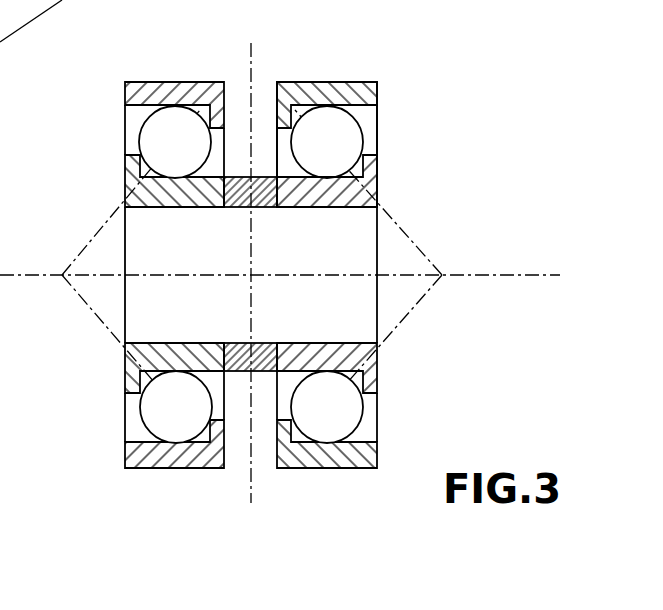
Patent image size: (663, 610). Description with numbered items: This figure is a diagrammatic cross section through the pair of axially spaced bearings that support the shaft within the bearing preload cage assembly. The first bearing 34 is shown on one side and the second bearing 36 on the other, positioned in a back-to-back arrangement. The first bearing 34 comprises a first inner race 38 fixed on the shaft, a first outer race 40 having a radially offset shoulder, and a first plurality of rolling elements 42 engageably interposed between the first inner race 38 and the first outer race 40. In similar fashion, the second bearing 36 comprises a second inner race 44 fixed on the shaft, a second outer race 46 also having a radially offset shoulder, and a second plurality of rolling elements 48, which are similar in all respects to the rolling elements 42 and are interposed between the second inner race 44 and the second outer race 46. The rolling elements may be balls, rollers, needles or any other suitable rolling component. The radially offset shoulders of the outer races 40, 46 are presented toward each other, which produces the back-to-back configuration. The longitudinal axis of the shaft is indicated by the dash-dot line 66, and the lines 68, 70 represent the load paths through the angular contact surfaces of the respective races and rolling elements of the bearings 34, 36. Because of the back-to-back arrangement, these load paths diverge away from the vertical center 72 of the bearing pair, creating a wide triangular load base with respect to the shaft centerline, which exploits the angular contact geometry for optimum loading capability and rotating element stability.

The first bearing 34 is at (357, 105).
The second bearing 36 is at (143, 105).
The first inner race 38 is at (320, 350).
The first outer race 40 is at (353, 92).
The first plurality of rolling elements 42 is at (347, 135).
The second inner race 44 is at (153, 355).
The second outer race 46 is at (155, 97).
The second plurality of rolling elements 48 is at (157, 140).
The longitudinal axis 66 is at (530, 278).
The load path line 68 is at (422, 250).
The load path line 70 is at (102, 228).
The vertical center 72 is at (252, 495).